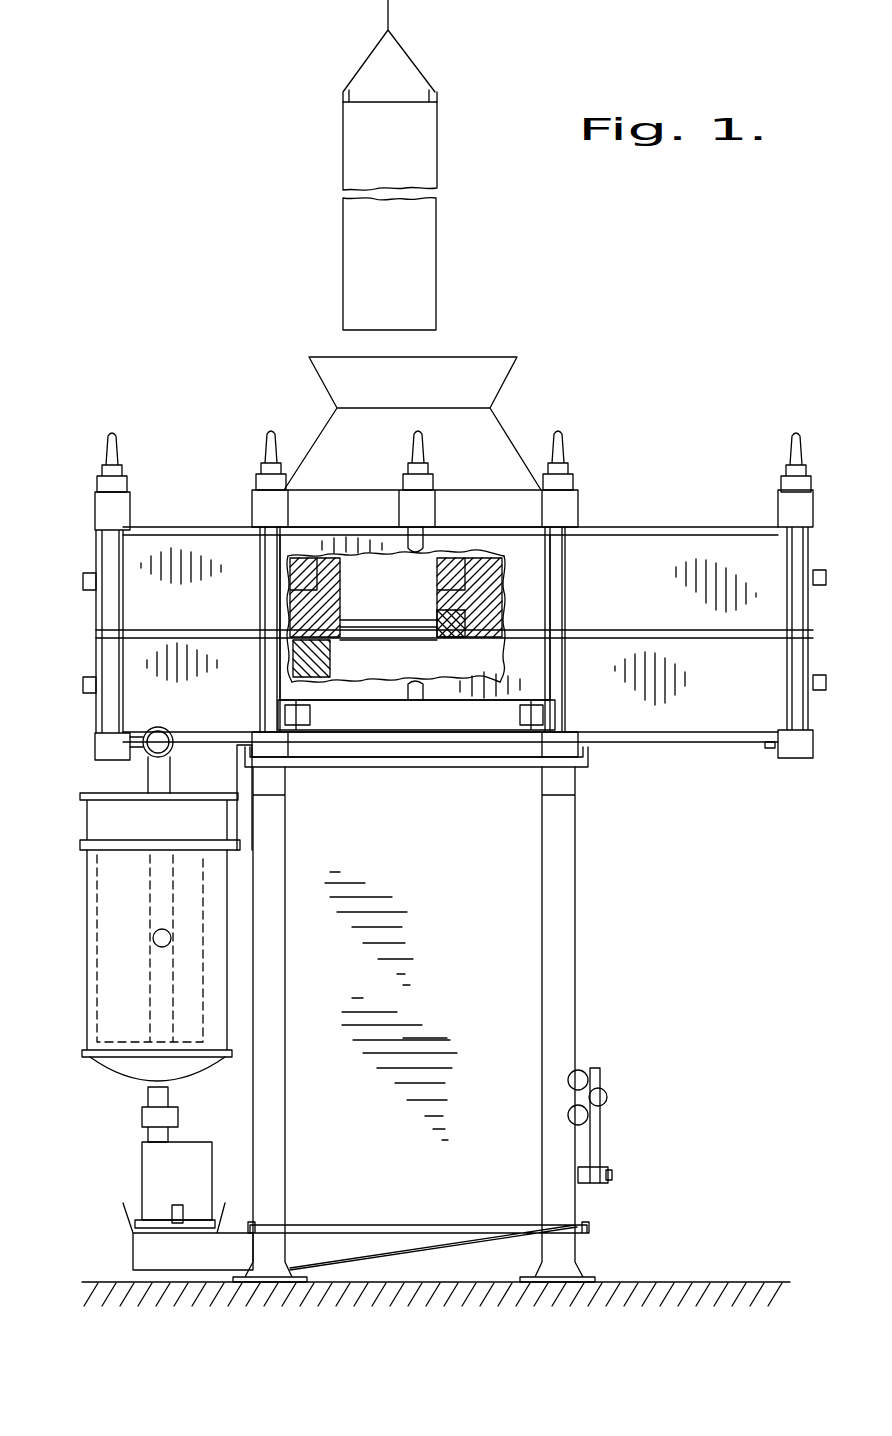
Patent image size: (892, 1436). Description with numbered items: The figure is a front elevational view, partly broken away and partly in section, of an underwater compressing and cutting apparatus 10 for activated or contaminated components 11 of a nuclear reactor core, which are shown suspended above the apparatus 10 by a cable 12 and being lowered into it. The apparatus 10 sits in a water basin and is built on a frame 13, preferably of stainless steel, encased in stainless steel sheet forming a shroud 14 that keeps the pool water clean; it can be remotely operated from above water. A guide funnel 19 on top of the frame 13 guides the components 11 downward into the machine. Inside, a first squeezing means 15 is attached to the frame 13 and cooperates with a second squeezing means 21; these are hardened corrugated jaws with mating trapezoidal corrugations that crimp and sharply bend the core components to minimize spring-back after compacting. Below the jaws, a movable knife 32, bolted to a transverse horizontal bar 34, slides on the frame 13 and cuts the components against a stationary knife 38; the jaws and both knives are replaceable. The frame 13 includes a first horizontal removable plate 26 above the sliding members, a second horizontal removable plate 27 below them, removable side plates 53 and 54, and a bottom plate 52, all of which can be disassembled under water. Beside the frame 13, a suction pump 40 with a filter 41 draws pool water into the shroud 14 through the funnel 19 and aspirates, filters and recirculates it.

The underwater compressing and cutting apparatus 10 is at (606, 459).
The activated or contaminated components 11 is at (437, 276).
The cable 12 is at (415, 60).
The frame 13 is at (283, 846).
The shroud 14 is at (527, 999).
The first squeezing means 15 is at (435, 570).
The guide funnel 19 is at (510, 427).
The second squeezing means 21 is at (345, 574).
The first horizontal removable member or plate 26 is at (208, 525).
The second horizontal removable member or plate 27 is at (187, 628).
The knife 32 is at (340, 652).
The horizontal bar 34 is at (322, 673).
The stationary knife 38 is at (453, 632).
The suction pump 40 is at (142, 1163).
The filter 41 is at (87, 1042).
The bottom plate 52 is at (202, 732).
The removable side plates 53 is at (155, 558).
The removable side plates 54 is at (138, 703).